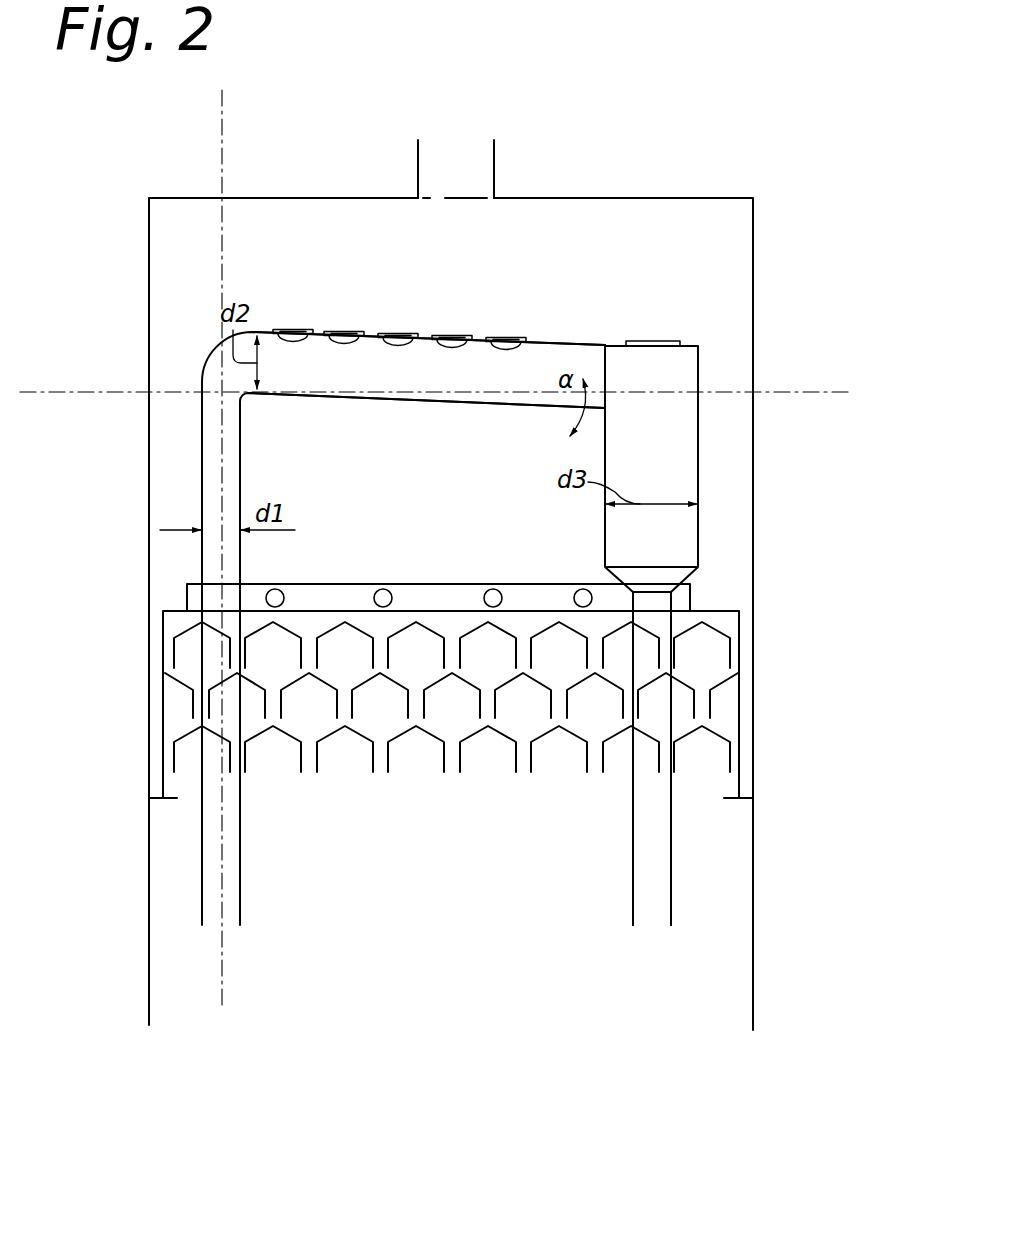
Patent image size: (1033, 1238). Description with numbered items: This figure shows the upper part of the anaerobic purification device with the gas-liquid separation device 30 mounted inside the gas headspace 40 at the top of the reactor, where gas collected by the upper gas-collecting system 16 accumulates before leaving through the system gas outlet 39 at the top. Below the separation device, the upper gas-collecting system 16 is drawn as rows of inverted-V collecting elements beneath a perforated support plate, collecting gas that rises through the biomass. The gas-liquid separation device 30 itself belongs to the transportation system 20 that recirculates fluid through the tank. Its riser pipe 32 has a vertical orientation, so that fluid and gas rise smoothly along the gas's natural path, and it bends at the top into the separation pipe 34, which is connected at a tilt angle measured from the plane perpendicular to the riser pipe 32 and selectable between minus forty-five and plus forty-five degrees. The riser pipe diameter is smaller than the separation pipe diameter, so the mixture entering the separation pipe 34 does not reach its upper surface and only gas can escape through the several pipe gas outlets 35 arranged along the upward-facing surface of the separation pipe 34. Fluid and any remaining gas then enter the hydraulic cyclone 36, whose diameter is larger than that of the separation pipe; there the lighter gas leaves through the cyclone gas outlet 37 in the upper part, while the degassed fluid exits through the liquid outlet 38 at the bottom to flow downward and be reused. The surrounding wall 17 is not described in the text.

The upper gas-collecting system 16 is at (185, 690).
The column wall 17 is at (150, 497).
The transportation system 20 is at (720, 830).
The gas-liquid separation device 30 is at (452, 580).
The riser pipe 32 is at (210, 466).
The separation pipe 34 is at (543, 373).
The pipe gas outlet 35 is at (396, 330).
The hydraulic cyclone 36 is at (678, 422).
The cyclone gas outlet 37 is at (650, 345).
The liquid outlet 38 is at (675, 590).
The system gas outlet 39 is at (494, 172).
The gas headspace 40 is at (255, 232).